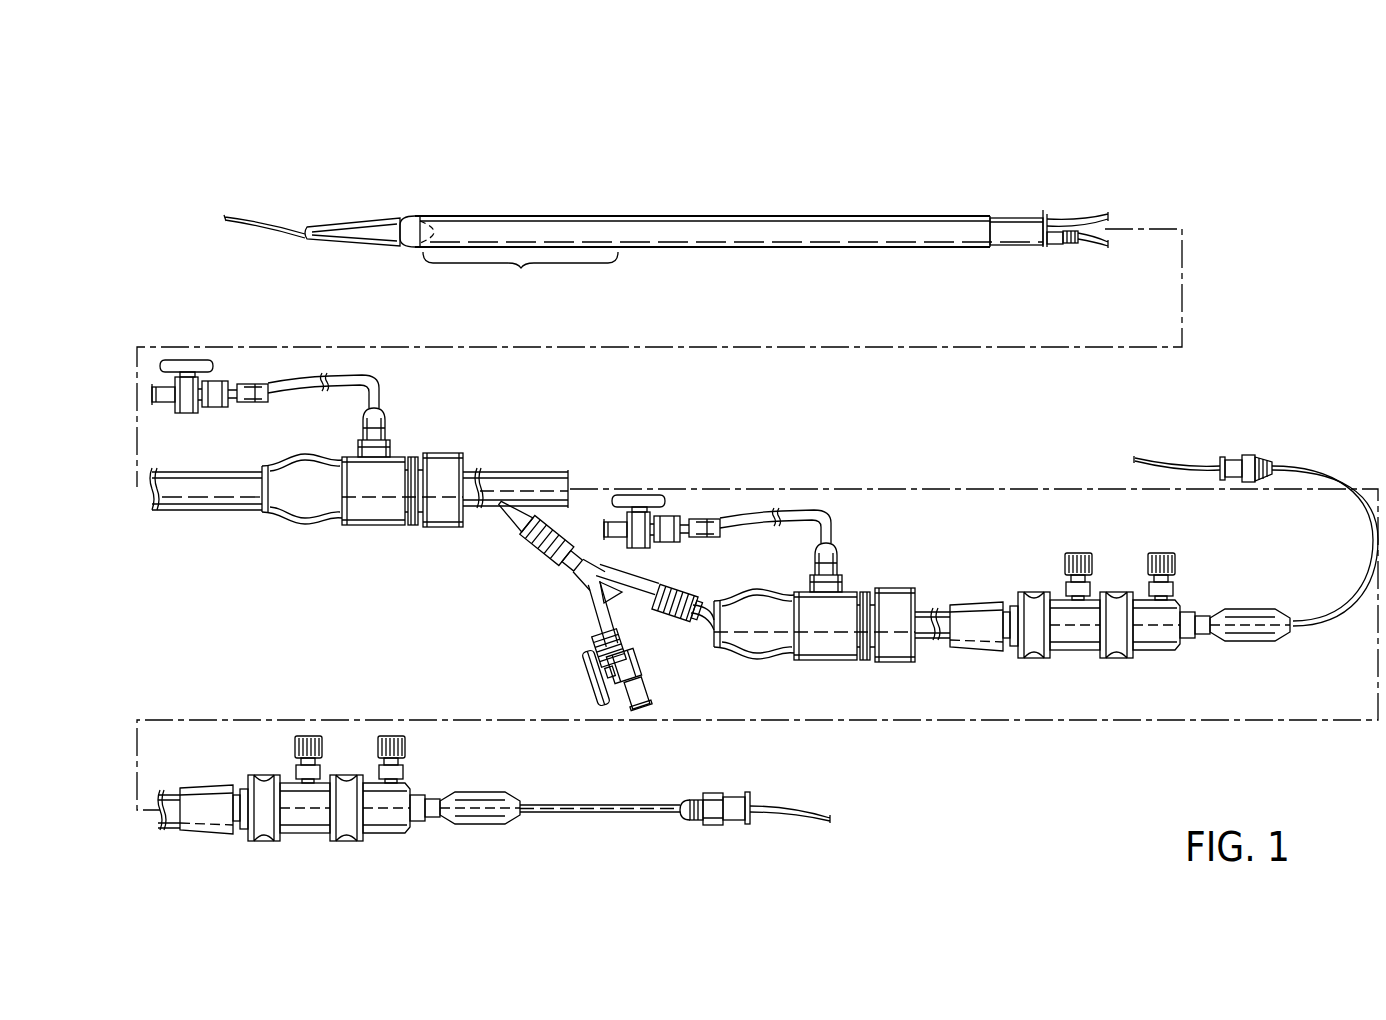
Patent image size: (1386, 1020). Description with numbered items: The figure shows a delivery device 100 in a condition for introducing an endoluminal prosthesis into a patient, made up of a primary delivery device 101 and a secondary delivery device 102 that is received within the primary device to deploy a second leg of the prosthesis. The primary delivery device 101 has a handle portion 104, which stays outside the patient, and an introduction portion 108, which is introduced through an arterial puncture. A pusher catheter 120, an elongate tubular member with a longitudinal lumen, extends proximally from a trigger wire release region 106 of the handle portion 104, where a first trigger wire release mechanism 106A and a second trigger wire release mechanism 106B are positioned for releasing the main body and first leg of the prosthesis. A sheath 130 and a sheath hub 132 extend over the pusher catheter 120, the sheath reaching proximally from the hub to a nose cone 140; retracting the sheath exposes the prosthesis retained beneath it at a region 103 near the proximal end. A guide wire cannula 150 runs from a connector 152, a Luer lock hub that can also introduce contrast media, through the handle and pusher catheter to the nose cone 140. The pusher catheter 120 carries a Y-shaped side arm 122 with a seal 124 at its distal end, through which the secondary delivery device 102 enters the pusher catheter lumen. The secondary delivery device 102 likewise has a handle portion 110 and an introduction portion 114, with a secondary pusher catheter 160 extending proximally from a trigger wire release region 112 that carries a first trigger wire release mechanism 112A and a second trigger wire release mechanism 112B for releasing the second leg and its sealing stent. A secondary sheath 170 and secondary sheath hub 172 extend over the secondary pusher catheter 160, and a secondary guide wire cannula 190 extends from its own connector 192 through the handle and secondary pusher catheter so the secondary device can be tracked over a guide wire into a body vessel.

The delivery device 100 is at (1192, 208).
The primary delivery device 101 is at (352, 390).
The secondary delivery device 102 is at (775, 605).
The region 103 is at (522, 268).
The handle portion 104 is at (359, 467).
The trigger wire release region 106 is at (491, 803).
The first trigger wire release mechanism 106A is at (396, 820).
The second trigger wire release mechanism 106B is at (293, 820).
The introduction portion 108 is at (721, 226).
The handle portion 110 is at (808, 605).
The trigger wire release region 112 is at (1142, 556).
The first trigger wire release mechanism 112A is at (1160, 645).
The second trigger wire release mechanism 112B is at (1068, 645).
The introduction portion 114 is at (812, 207).
The pusher catheter 120 is at (1008, 218).
The side arm 122 is at (618, 602).
The seal 124 is at (695, 595).
The sheath 130 is at (557, 216).
The sheath hub 132 is at (373, 504).
The nose cone 140 is at (372, 229).
The guide wire cannula 150 is at (1055, 222).
The connector 152 is at (715, 795).
The secondary pusher catheter 160 is at (1068, 250).
The secondary sheath 170 is at (1053, 246).
The secondary sheath hub 172 is at (807, 645).
The secondary guide wire cannula 190 is at (1085, 247).
The connector 192 is at (1248, 455).